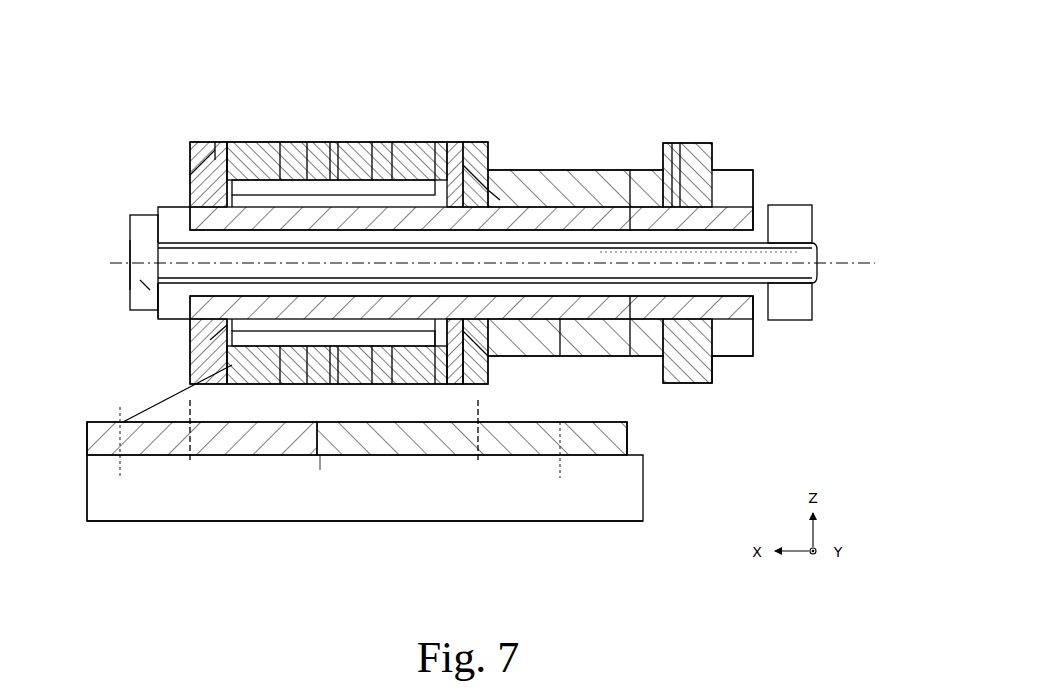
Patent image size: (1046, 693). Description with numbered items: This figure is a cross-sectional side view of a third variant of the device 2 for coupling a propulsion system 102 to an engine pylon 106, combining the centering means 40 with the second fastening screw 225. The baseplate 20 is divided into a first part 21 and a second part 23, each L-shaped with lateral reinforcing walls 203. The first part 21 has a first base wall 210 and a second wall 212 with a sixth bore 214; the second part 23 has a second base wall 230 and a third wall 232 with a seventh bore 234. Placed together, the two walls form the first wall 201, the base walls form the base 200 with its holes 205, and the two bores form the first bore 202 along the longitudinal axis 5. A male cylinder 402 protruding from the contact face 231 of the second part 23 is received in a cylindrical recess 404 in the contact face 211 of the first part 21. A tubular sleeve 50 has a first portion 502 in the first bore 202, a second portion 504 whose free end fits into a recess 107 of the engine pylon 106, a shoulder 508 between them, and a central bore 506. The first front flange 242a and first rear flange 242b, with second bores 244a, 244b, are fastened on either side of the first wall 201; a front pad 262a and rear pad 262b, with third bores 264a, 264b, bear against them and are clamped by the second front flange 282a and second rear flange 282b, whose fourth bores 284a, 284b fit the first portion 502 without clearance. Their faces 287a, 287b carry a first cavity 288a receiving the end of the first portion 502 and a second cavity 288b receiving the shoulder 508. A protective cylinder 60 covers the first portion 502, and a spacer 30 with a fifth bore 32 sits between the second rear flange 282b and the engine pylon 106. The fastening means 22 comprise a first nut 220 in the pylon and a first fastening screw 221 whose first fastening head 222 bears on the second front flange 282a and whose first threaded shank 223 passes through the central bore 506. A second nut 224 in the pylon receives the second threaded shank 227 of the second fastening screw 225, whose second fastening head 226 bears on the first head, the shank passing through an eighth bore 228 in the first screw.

The device 2 is at (621, 95).
The longitudinal axis 5 is at (870, 262).
The baseplate 20 is at (630, 440).
The first part 21 is at (202, 438).
The fastening means 22 is at (807, 272).
The second part 23 is at (472, 438).
The spacer 30 is at (600, 356).
The fifth bore 32 is at (563, 207).
The centering means 40 is at (344, 139).
The sleeve 50 is at (619, 201).
The protective cylinder 60 is at (215, 142).
The propulsion system 102 is at (365, 491).
The engine pylon 106 is at (681, 143).
The recess 107 is at (672, 145).
The base 200 is at (319, 458).
The first wall 201 is at (352, 142).
The first bore 202 is at (366, 384).
The lateral reinforcing walls 203 is at (170, 388).
The holes 205 is at (120, 407).
The first base wall 210 is at (118, 500).
The contact face 211 is at (322, 384).
The second wall 212 is at (292, 142).
The sixth bore 214 is at (300, 384).
The first nut 220 is at (745, 195).
The first fastening screw 221 is at (156, 313).
The first fastening head 222 is at (160, 210).
The first threaded shank 223 is at (738, 237).
The second nut 224 is at (788, 178).
The second fastening screw 225 is at (128, 250).
The second fastening head 226 is at (148, 290).
The second threaded shank 227 is at (650, 257).
The eighth bore 228 is at (738, 356).
The second base wall 230 is at (578, 456).
The contact face 231 is at (346, 384).
The third wall 232 is at (386, 142).
The seventh bore 234 is at (386, 384).
The first front flange 242a is at (258, 142).
The first rear flange 242b is at (415, 142).
The second bore 244a is at (272, 384).
The second bore 244b is at (406, 384).
The front pad 262a is at (232, 142).
The rear pad 262b is at (441, 142).
The third bore 264a is at (242, 384).
The third bore 264b is at (440, 384).
The second front flange 282a is at (200, 185).
The second rear flange 282b is at (470, 142).
The fourth bore 284a is at (215, 384).
The fourth bore 284b is at (457, 384).
The face 287a is at (200, 160).
The face 287b is at (470, 150).
The first cavity 288a is at (230, 195).
The second cavity 288b is at (500, 195).
The male cylinder 402 is at (338, 142).
The cylindrical recess 404 is at (322, 142).
The first portion 502 is at (210, 330).
The second portion 504 is at (580, 356).
The central bore 506 is at (634, 356).
The shoulder 508 is at (498, 336).